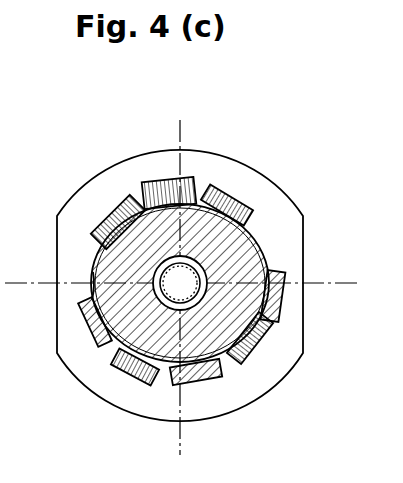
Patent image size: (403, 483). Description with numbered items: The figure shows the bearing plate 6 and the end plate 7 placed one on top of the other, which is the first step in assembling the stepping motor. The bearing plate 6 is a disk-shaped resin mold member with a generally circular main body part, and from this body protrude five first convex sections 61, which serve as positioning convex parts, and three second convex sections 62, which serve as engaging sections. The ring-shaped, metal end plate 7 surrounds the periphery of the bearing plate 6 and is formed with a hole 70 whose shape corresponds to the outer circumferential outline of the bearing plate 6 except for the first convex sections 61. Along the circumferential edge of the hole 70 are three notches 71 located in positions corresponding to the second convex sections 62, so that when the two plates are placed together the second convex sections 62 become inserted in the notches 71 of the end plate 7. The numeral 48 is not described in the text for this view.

The bearing plate 6 is at (258, 325).
The end plate 7 is at (227, 180).
The rotor core surface 48 is at (93, 272).
The first convex sections 61 is at (208, 384).
The second convex sections 62 is at (143, 185).
The hole 70 is at (262, 252).
The notches 71 is at (145, 183).